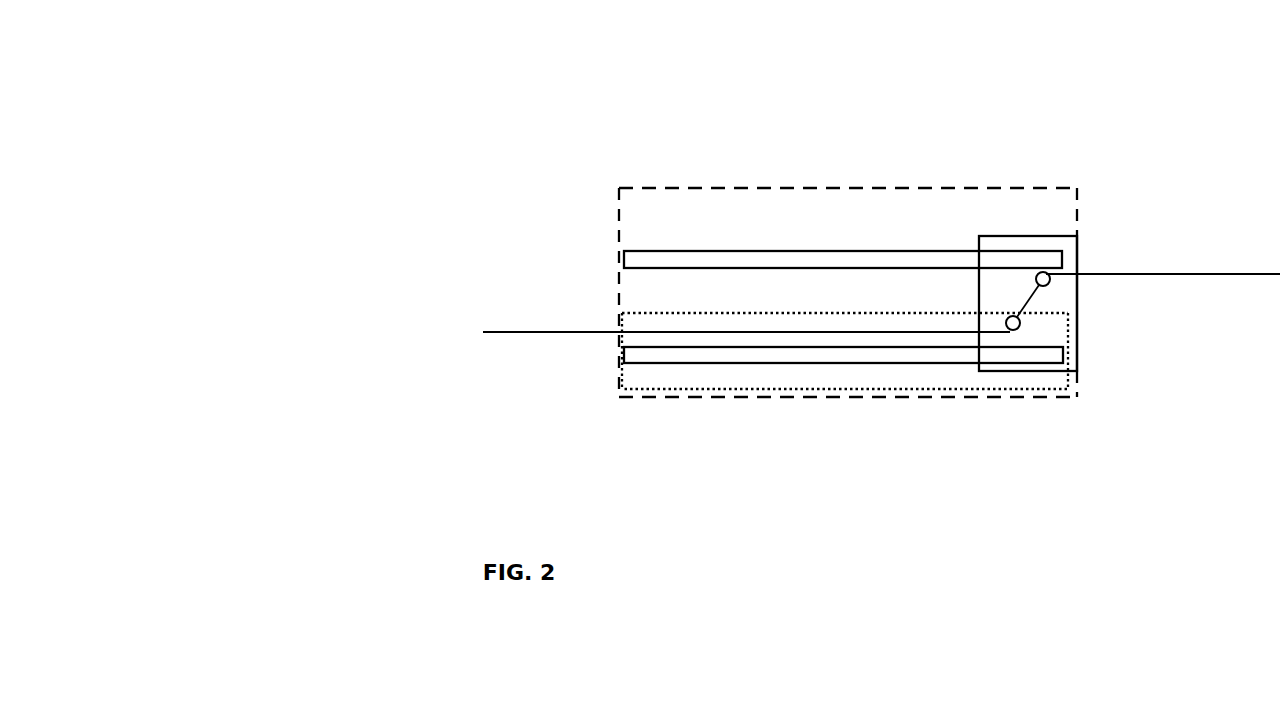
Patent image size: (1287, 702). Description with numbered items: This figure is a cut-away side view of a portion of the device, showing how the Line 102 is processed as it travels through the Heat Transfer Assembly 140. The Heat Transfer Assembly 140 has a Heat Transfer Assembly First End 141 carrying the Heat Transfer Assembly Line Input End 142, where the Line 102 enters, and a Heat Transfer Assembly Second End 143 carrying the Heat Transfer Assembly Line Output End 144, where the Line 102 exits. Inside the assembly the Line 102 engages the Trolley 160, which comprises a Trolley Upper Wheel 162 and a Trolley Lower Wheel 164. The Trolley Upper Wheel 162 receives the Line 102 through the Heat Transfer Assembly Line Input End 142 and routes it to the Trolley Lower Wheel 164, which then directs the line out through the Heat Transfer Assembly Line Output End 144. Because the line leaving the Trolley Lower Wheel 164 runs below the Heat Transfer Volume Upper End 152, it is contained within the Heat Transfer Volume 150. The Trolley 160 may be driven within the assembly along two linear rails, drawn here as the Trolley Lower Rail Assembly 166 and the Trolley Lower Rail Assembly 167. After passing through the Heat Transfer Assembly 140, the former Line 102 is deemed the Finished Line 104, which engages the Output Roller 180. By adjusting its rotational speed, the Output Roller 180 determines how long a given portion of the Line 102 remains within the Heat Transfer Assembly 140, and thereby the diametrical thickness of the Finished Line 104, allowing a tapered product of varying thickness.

The Line 102 is at (1138, 275).
The Finished Line 104 is at (590, 332).
The Heat Transfer Assembly 140 is at (657, 185).
The Heat Transfer Assembly First End 141 is at (1085, 208).
The Heat Transfer Assembly Line Input End 142 is at (1088, 260).
The Heat Transfer Assembly Second End 143 is at (605, 240).
The Heat Transfer Assembly Line Output End 144 is at (608, 323).
The Heat Transfer Volume 150 is at (810, 315).
The Heat Transfer Volume Upper End 152 is at (925, 313).
The Trolley 160 is at (1013, 222).
The Trolley Upper Wheel 162 is at (1050, 287).
The Trolley Lower Wheel 164 is at (1022, 333).
The Trolley Lower Rail Assembly 166 is at (712, 264).
The Trolley Lower Rail Assembly 167 is at (845, 361).
The Output Roller 180 is at (387, 323).